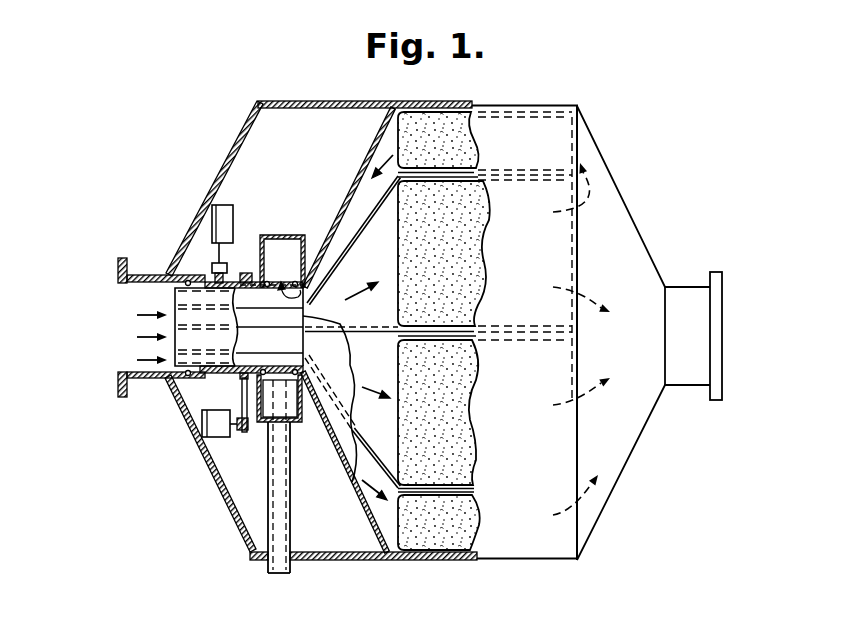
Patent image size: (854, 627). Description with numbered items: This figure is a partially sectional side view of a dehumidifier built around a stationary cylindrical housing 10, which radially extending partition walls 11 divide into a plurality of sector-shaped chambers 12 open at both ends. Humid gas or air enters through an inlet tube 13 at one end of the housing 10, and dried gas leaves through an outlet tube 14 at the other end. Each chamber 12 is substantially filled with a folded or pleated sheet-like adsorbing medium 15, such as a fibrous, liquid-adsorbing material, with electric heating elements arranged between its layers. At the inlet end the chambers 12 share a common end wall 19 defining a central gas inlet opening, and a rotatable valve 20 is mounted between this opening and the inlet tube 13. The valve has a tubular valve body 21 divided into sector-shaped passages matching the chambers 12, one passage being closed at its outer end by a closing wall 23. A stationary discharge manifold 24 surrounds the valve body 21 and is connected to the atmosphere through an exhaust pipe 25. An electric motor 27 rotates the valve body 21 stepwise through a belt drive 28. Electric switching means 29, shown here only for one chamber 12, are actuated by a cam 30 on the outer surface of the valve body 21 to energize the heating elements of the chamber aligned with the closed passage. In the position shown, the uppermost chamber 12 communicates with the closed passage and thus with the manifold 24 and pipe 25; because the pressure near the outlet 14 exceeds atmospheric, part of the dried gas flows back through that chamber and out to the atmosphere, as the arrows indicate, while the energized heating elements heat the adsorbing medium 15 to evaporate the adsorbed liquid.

The housing 10 is at (328, 103).
The partition walls 11 is at (433, 170).
The sector-shaped chambers 12 is at (351, 459).
The inlet tube 13 is at (118, 270).
The outlet tube 14 is at (720, 278).
The adsorbing medium 15 is at (447, 537).
The common end wall 19 is at (352, 182).
The rotatable valve 20 is at (207, 274).
The tubular valve body 21 is at (175, 308).
The closing wall 23 is at (177, 281).
The discharge manifold 24 is at (275, 235).
The exhaust pipe 25 is at (268, 567).
The electric motor 27 is at (215, 436).
The belt drive 28 is at (237, 397).
The electric switching means 29 is at (218, 220).
The cam 30 is at (200, 268).